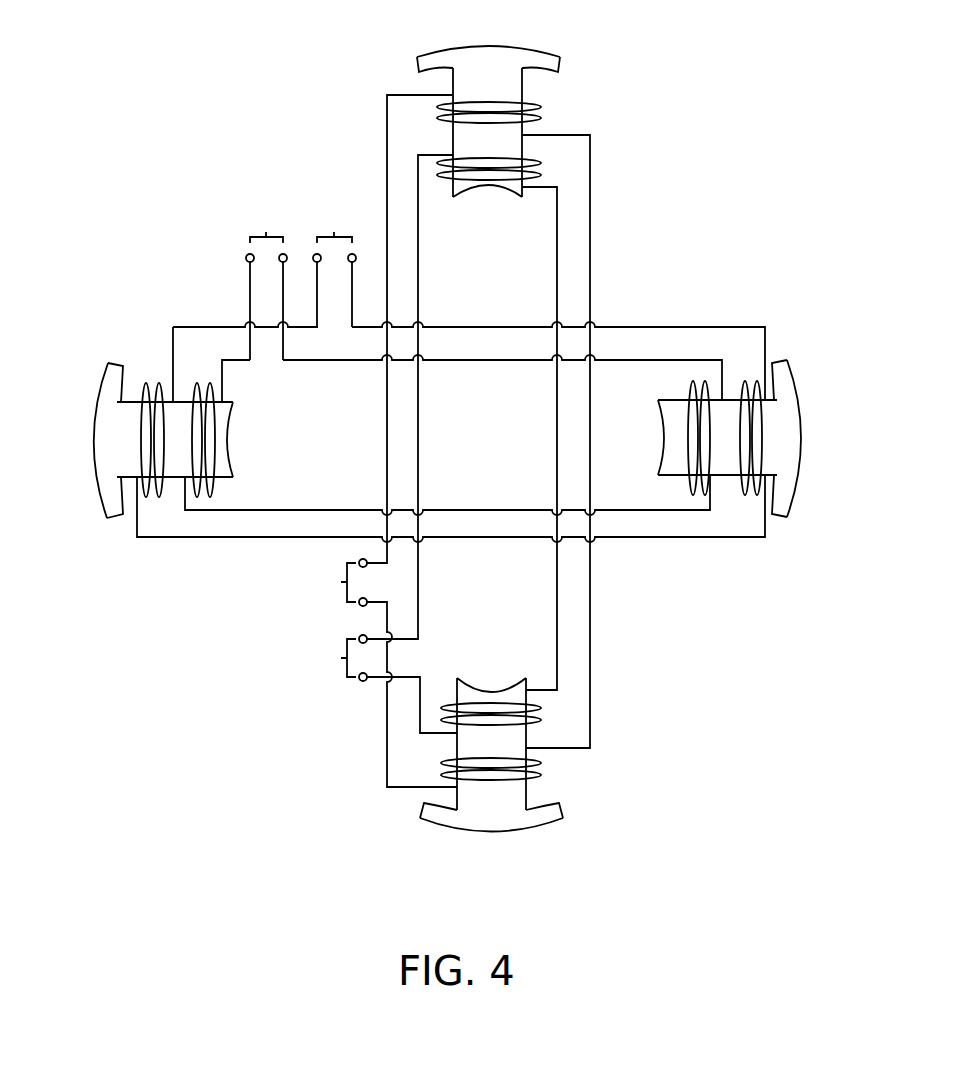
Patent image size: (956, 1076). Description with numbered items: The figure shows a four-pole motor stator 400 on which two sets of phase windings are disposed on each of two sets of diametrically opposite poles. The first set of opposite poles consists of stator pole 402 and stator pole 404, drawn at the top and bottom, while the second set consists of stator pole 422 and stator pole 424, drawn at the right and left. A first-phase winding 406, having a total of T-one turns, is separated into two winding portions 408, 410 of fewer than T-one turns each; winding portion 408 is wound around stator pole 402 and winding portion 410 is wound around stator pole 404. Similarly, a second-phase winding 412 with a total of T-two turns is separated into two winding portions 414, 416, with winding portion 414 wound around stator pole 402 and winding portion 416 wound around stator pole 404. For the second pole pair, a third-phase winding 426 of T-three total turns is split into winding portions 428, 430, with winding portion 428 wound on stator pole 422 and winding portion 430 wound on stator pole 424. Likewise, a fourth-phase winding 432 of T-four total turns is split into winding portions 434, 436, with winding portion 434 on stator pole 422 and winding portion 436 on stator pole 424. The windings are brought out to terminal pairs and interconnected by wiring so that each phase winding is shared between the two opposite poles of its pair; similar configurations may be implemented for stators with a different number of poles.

The motor stator 400 is at (722, 170).
The stator pole 402 is at (461, 188).
The stator pole 404 is at (475, 693).
The phase A1 winding 406 is at (308, 576).
The phase A1 winding portion 408 is at (492, 108).
The phase A1 winding portion 410 is at (505, 772).
The phase A2 winding 412 is at (308, 662).
The phase A2 winding portion 414 is at (506, 186).
The phase A2 winding portion 416 is at (503, 712).
The stator pole 422 is at (680, 422).
The stator pole 424 is at (218, 462).
The phase B1 winding 426 is at (337, 178).
The phase B1 winding portion 428 is at (752, 432).
The phase B1 winding portion 430 is at (140, 432).
The phase B2 winding 432 is at (262, 178).
The phase B2 winding portion 434 is at (690, 462).
The phase B2 winding portion 436 is at (205, 430).